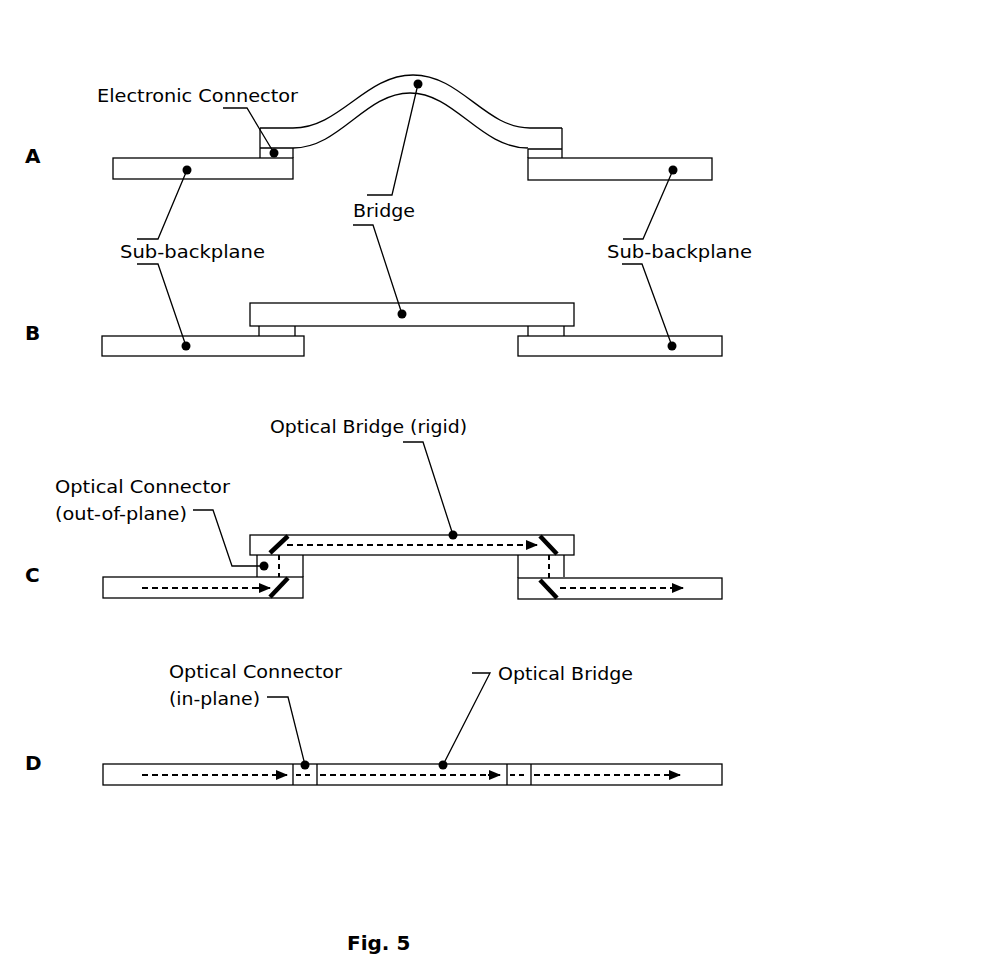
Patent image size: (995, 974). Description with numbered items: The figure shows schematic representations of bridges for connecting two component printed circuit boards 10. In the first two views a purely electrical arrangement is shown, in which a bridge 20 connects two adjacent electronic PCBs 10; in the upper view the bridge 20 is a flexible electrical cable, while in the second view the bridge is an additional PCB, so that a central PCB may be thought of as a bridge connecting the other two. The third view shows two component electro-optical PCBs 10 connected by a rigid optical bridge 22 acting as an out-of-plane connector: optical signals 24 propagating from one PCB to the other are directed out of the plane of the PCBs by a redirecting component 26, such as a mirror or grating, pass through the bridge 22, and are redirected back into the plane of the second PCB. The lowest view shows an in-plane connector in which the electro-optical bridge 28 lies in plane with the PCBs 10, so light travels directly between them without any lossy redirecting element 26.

In FIG. 5A, the component PCB 10 is at (132, 172).
In FIG. 5B, the component PCB 10 is at (115, 345).
In FIG. 5C, the component PCB 10 is at (113, 590).
In FIG. 5D, the component PCB 10 is at (122, 777).
In FIG. 5A, the bridge 20 is at (367, 107).
In FIG. 5C, the optical bridge 22 is at (333, 538).
In FIG. 5C, the optical signals 24 is at (163, 592).
In FIG. 5C, the redirecting component 26 is at (553, 542).
In FIG. 5D, the electro-optical bridge 28 is at (408, 785).